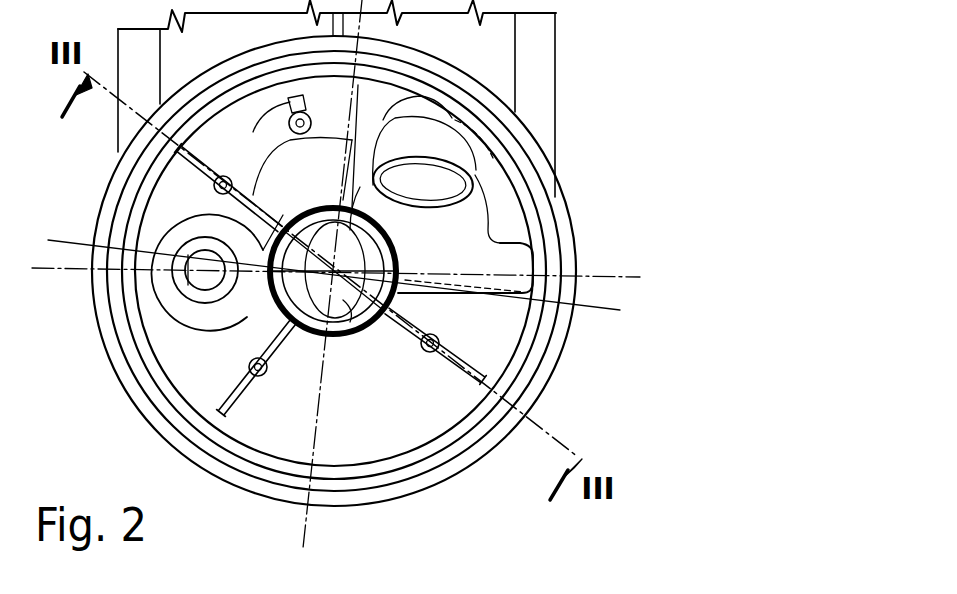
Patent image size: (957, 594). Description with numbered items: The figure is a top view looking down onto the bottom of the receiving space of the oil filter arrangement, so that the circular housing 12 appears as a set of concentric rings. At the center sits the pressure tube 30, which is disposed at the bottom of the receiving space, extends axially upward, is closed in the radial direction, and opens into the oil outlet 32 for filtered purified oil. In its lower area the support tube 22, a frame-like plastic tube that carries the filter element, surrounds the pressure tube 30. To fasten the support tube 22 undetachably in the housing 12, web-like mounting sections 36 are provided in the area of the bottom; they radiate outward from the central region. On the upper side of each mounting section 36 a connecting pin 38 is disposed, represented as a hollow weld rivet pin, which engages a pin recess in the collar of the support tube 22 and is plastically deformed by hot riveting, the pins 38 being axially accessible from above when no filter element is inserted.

The housing 12 is at (147, 392).
The support tube 22 is at (390, 228).
The pressure tube 30 is at (400, 262).
The oil outlet 32 is at (362, 333).
The mounting sections 36 is at (185, 156).
The connecting pin 38 is at (214, 191).